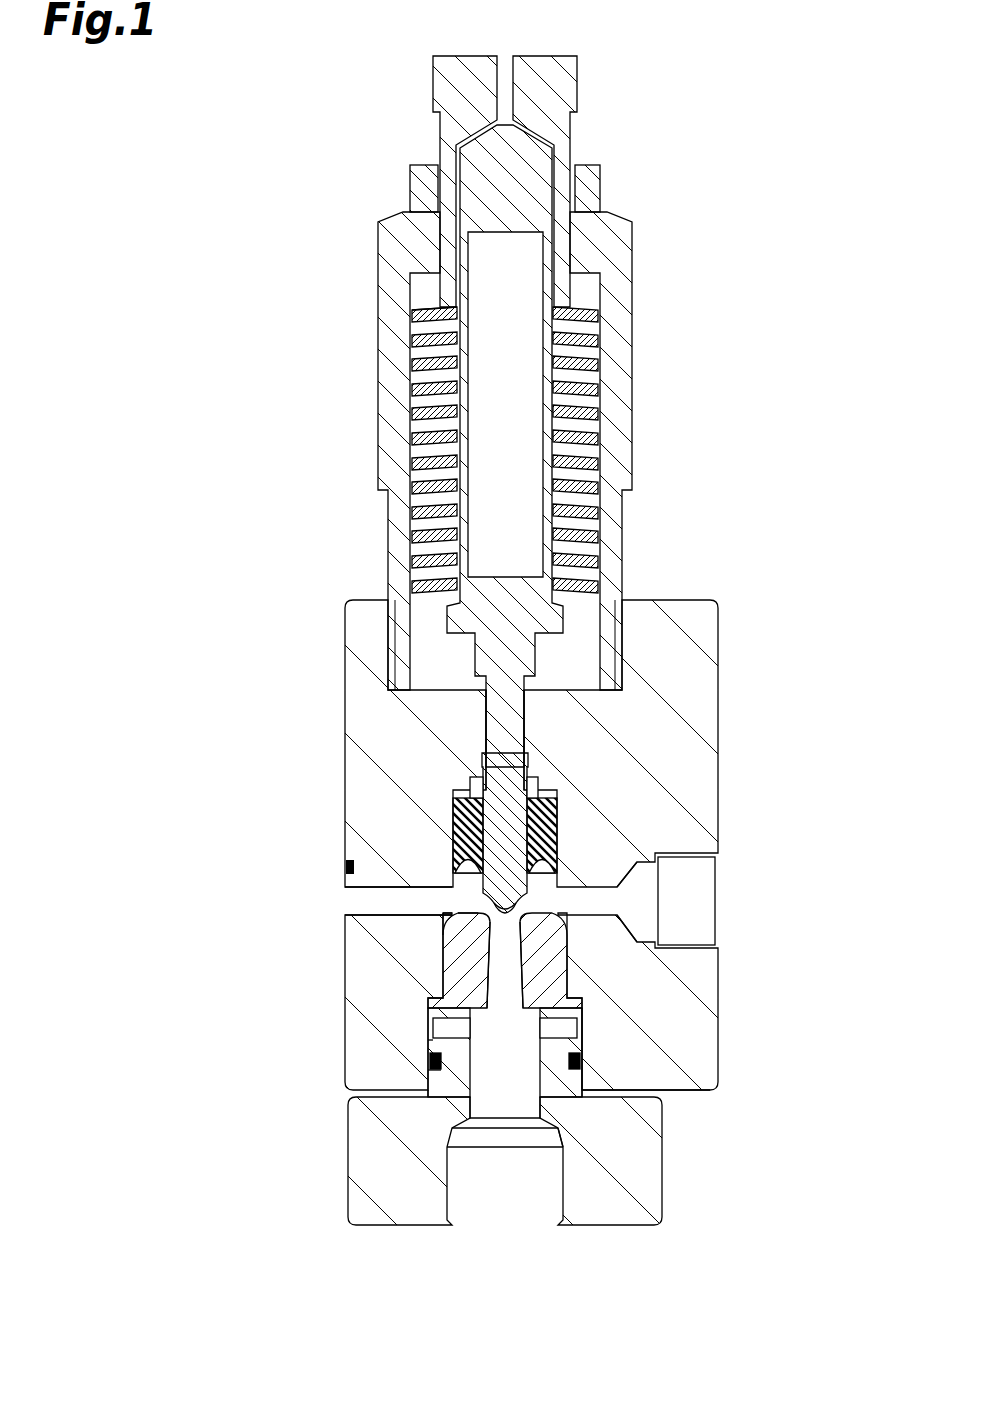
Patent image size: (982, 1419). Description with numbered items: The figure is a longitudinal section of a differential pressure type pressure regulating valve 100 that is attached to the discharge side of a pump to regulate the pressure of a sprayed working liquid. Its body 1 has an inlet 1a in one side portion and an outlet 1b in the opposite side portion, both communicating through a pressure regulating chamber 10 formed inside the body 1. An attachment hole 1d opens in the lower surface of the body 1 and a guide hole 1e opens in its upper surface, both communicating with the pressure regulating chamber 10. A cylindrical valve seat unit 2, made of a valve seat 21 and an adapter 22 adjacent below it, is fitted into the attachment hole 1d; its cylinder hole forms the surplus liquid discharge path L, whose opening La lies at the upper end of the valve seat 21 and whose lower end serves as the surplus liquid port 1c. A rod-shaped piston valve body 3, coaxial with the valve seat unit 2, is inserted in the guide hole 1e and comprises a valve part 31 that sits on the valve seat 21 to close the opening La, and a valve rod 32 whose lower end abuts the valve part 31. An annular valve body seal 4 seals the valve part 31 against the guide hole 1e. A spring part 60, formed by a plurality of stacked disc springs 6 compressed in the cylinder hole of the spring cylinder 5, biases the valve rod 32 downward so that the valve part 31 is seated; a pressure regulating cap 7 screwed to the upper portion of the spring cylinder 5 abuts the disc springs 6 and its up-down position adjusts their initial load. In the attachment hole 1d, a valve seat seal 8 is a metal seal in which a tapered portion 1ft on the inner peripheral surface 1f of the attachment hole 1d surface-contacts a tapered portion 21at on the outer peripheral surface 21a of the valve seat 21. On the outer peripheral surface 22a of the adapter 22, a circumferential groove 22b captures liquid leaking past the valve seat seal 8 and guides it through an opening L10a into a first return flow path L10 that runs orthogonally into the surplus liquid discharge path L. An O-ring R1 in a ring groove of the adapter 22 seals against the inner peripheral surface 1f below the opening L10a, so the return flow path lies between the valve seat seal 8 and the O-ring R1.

The pressure regulating valve 100 is at (875, 17).
The body 1 is at (673, 595).
The inlet 1a is at (458, 898).
The outlet 1b is at (718, 867).
The surplus liquid port 1c is at (528, 1227).
The attachment hole 1d is at (447, 1080).
The guide hole 1e is at (515, 713).
The inner peripheral surface of the attachment hole 1f is at (660, 1125).
The tapered portion 1ft is at (442, 957).
The valve seat unit 2 is at (815, 1022).
The valve seat 21 is at (557, 970).
The outer peripheral surface of the valve seat 21a is at (560, 962).
The tapered portion 21at is at (452, 940).
The adapter 22 is at (585, 1075).
The outer peripheral surface of the adapter 22a is at (583, 1062).
The groove 22b is at (430, 1030).
The piston valve body 3 is at (250, 637).
The valve part 31 is at (488, 812).
The valve rod 32 is at (486, 652).
The valve body seal 4 is at (472, 806).
The spring cylinder 5 is at (622, 326).
The disc spring 6 is at (413, 413).
The spring part 60 is at (408, 331).
The pressure regulating cap 7 is at (563, 80).
The valve seat seal 8 is at (227, 927).
The pressure regulating chamber 10 is at (455, 843).
The surplus liquid discharge path L is at (500, 1105).
The opening La is at (512, 888).
The first return flow path L10 is at (440, 1075).
The opening L10a is at (430, 1045).
The O-ring R1 is at (573, 1072).